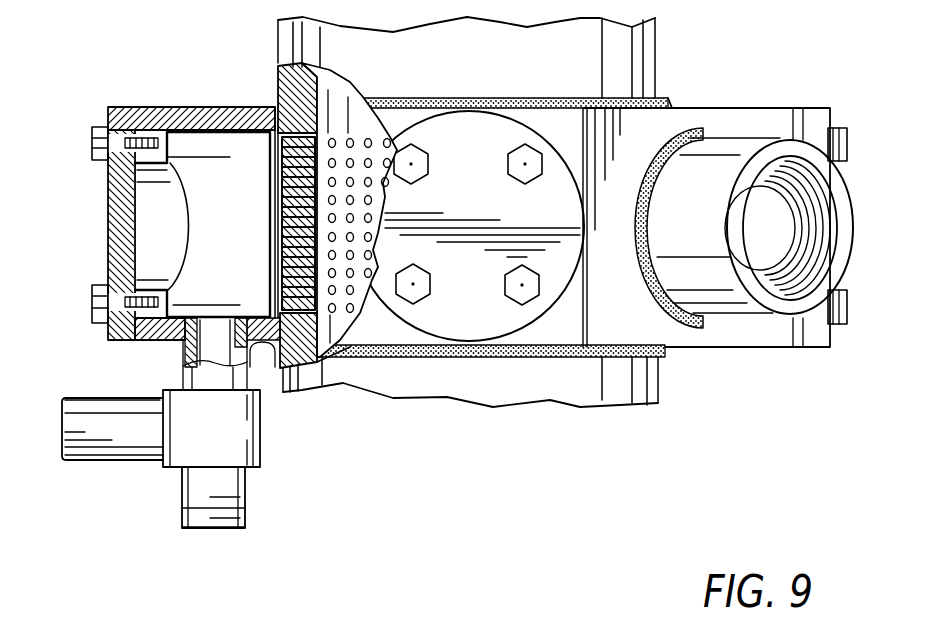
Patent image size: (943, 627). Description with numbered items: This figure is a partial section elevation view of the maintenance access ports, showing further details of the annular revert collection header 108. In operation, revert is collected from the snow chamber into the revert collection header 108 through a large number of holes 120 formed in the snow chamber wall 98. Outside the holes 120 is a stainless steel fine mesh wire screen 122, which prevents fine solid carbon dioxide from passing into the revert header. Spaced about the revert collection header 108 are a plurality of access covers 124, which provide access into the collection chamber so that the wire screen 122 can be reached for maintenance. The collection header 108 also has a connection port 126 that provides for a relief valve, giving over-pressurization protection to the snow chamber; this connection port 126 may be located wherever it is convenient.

The snow chamber wall 98 is at (302, 366).
The annular revert collection header 108 is at (198, 147).
The holes 120 is at (277, 107).
The stainless steel fine mesh wire screen 122 is at (270, 223).
The access covers 124 is at (108, 203).
The connection port 126 is at (207, 380).